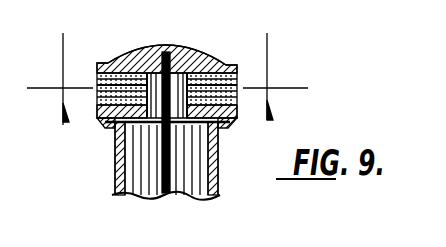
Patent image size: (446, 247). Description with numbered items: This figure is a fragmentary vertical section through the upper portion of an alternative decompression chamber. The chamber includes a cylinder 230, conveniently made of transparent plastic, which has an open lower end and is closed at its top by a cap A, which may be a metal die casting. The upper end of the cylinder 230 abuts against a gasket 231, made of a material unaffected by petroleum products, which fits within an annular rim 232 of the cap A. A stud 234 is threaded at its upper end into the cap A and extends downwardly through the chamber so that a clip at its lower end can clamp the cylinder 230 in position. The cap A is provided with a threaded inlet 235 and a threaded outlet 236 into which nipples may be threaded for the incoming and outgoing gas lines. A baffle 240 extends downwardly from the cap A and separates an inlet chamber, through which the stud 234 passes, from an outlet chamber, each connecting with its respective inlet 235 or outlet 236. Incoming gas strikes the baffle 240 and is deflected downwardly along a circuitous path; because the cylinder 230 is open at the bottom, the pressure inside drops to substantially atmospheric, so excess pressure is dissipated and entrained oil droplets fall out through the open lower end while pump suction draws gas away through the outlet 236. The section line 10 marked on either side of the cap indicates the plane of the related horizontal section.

The section line 10- 10 is at (167, 79).
The cap A is at (198, 46).
The cylinder 230 is at (118, 192).
The gasket 231 is at (222, 127).
The annular rim 232 is at (104, 124).
The stud 234 is at (158, 191).
The threaded inlet 235 is at (96, 76).
The threaded outlet 236 is at (237, 103).
The baffle 240 is at (178, 113).